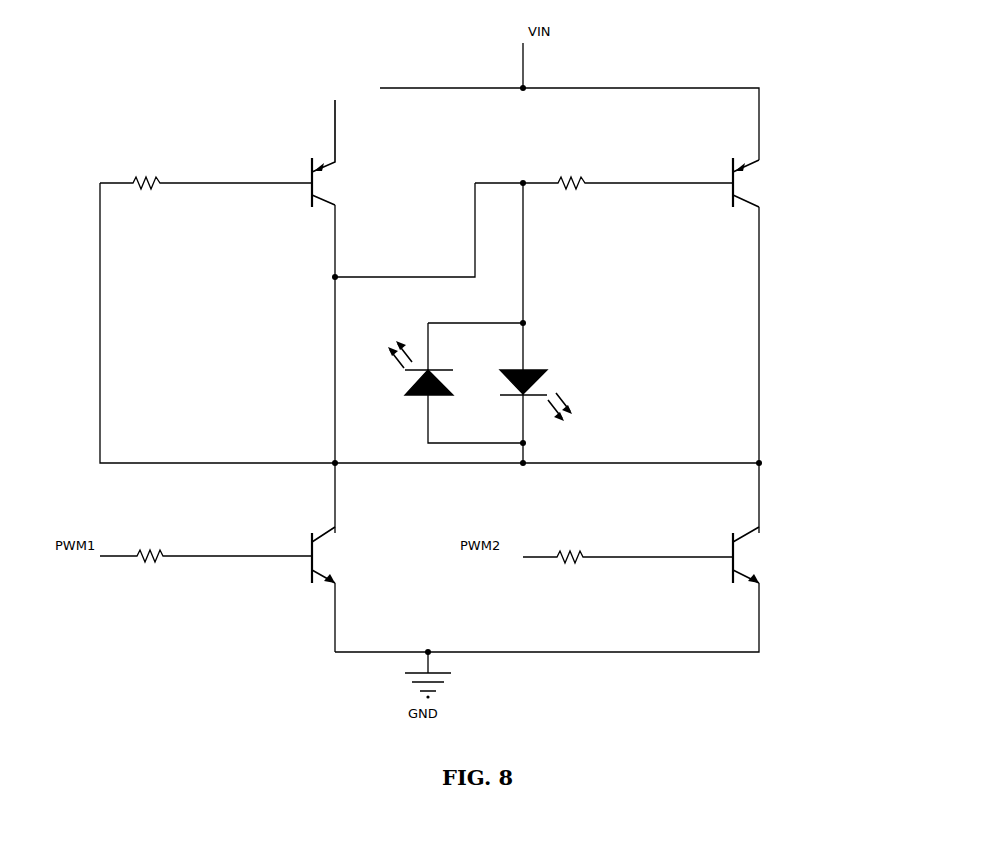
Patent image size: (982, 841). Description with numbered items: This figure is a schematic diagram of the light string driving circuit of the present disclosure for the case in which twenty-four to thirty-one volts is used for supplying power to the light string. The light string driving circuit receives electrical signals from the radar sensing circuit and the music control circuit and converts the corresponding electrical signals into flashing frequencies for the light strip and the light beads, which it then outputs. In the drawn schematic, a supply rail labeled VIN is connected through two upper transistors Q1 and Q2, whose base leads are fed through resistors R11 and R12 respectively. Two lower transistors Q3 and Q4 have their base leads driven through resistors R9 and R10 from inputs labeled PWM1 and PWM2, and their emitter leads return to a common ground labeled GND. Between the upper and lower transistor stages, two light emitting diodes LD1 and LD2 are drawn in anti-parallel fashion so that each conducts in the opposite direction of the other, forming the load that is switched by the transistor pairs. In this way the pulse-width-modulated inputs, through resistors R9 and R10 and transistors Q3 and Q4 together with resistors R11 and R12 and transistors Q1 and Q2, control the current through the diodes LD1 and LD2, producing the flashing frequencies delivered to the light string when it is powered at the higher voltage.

The resistor R11 (Res11, 3K) R11 is at (206, 194).
The resistor R12 (Res12, 3K) R12 is at (604, 194).
The resistor R9 (Res9, 750R) R9 is at (206, 572).
The resistor R10 (Res10, 750R) R10 is at (628, 572).
The PNP transistor Q1 is at (339, 168).
The PNP transistor Q2 is at (763, 181).
The NPN transistor Q3 is at (343, 558).
The NPN transistor Q4 is at (766, 558).
The light emitting diode LD1 is at (455, 383).
The light emitting diode LD2 is at (551, 395).